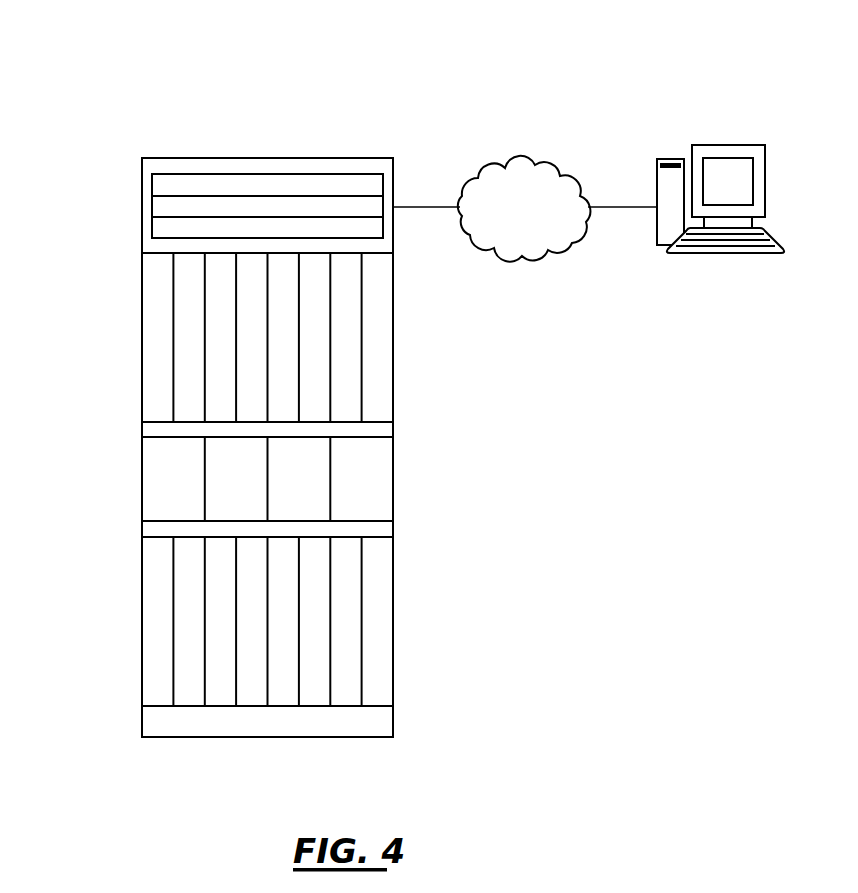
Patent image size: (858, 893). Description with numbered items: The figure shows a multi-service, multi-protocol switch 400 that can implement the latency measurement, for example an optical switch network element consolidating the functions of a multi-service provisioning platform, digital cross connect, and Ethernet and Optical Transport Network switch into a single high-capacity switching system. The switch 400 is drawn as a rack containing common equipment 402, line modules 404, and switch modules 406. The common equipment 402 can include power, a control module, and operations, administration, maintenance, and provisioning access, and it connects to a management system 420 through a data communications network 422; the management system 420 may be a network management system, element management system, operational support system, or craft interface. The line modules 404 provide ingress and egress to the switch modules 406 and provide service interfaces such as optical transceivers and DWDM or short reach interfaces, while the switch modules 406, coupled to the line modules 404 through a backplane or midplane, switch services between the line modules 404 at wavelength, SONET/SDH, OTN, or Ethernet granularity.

The multi-service, multi-protocol switch 400 is at (354, 70).
The common equipment 402 is at (266, 173).
The line modules 404 is at (394, 305).
The switch modules 406 is at (394, 487).
The management system 420 is at (766, 186).
The data communications network 422 is at (543, 218).